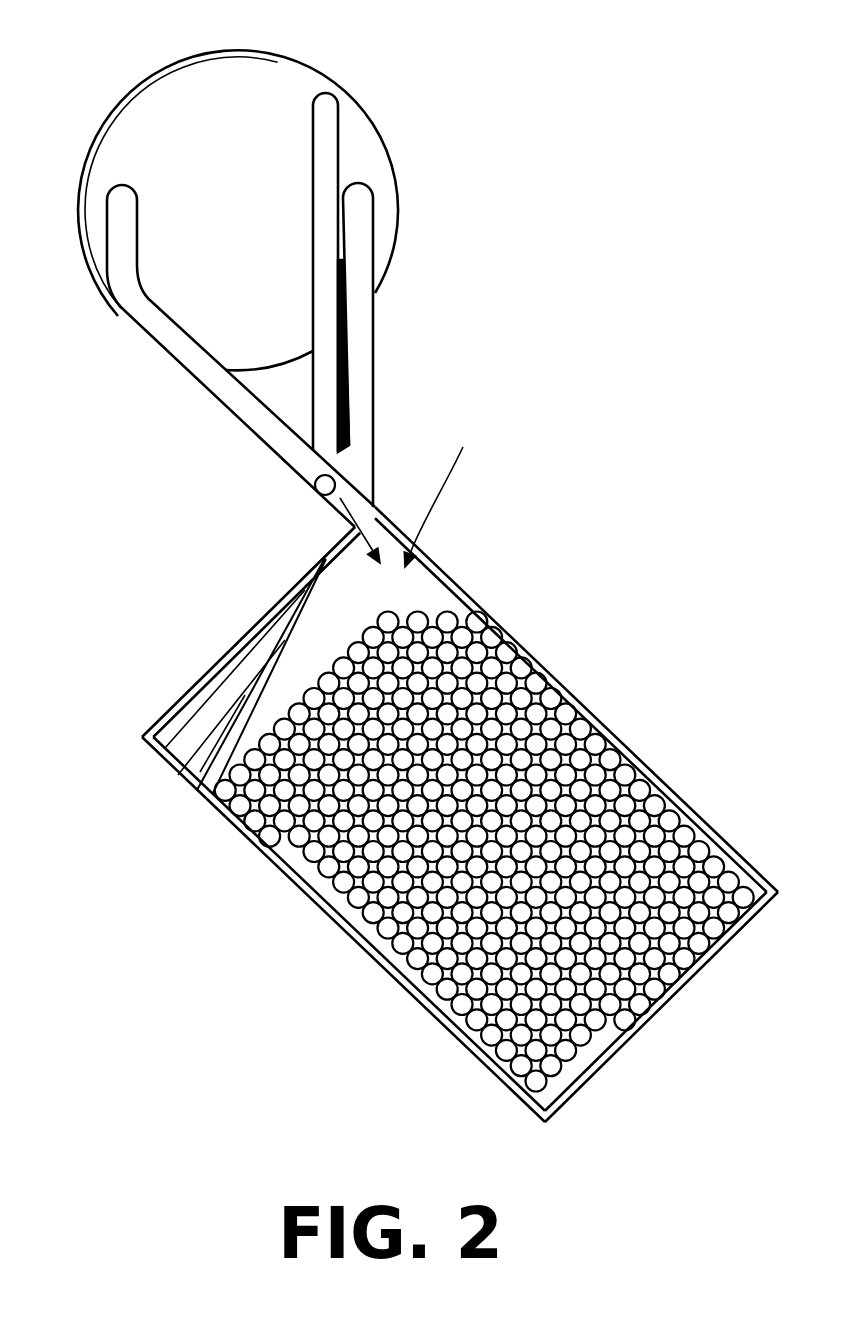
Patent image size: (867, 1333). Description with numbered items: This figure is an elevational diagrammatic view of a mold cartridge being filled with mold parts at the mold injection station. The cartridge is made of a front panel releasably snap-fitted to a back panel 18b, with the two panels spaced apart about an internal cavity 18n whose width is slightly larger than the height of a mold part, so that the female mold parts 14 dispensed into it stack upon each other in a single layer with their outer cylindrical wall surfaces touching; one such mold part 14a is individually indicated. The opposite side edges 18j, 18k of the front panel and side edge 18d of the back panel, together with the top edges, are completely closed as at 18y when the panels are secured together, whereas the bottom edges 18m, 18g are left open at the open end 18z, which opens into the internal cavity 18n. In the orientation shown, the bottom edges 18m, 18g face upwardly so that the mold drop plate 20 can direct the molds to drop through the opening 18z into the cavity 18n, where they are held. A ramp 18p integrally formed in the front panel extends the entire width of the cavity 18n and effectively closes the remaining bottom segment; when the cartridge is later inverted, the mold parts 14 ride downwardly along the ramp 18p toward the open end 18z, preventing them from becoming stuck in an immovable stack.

The mold drop plate 20 is at (320, 72).
The female mold parts 14 is at (315, 485).
The object 14a is at (484, 614).
The internal cavity 18n is at (420, 490).
The open end 18z is at (330, 551).
The ramp 18p is at (270, 657).
The bottom edge 18m is at (163, 713).
The bottom edge 18g is at (233, 635).
The side edge 18k is at (563, 686).
The back panel 18b is at (571, 705).
The side edge 18j is at (320, 907).
The side edge 18d is at (349, 924).
The closed edge 18y is at (660, 1010).